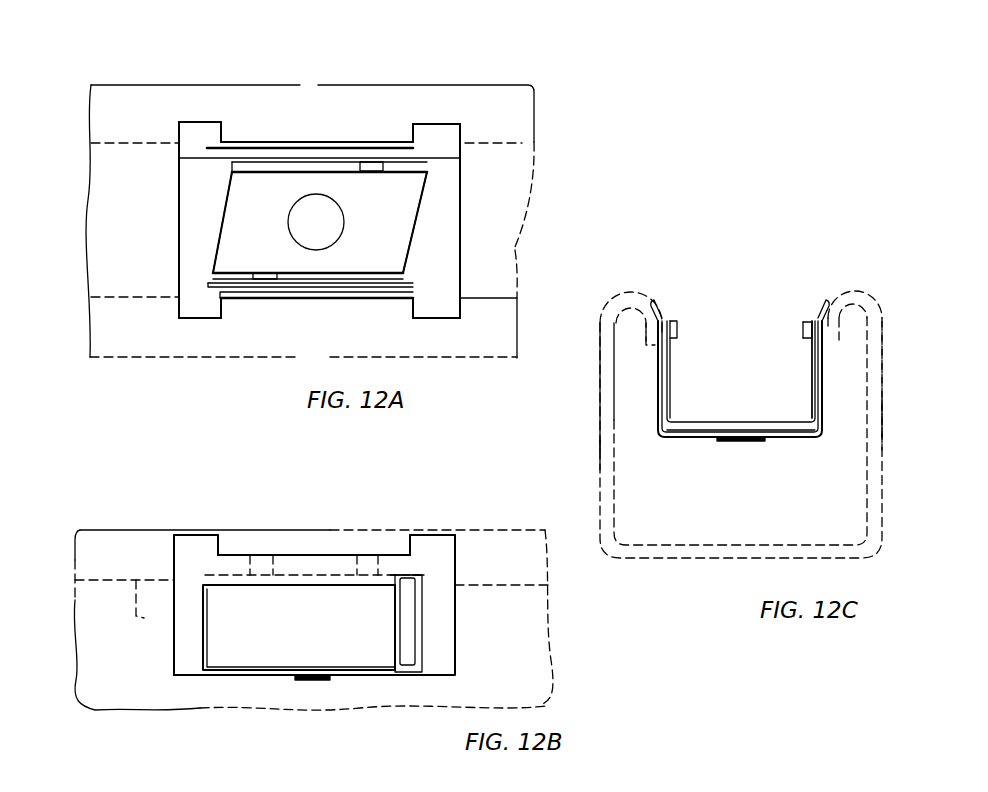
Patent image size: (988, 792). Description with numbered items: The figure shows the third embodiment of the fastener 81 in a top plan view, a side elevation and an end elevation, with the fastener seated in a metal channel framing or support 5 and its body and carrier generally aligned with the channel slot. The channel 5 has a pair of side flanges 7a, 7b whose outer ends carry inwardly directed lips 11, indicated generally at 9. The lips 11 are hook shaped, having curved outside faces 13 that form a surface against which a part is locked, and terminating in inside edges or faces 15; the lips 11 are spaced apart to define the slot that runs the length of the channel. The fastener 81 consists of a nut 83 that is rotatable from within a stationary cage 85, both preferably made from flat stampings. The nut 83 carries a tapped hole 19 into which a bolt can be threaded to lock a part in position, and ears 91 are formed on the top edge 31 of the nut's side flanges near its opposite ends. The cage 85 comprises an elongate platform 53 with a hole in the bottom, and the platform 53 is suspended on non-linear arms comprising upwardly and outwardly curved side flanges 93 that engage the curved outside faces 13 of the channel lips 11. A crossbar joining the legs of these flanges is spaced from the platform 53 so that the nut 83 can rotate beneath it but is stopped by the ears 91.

In FIG. 12A, the channel framing or support 5 is at (515, 246).
In FIG. 12B, the channel framing or support 5 is at (553, 650).
In FIG. 12C, the channel framing or support 5 is at (599, 410).
In FIG. 12C, the side flange 7a is at (599, 462).
In FIG. 12C, the side flange 7b is at (884, 426).
In FIG. 12A, the lip region 9 is at (532, 112).
In FIG. 12B, the lip region 9 is at (553, 556).
In FIG. 12C, the lip region 9 is at (852, 295).
In FIG. 12C, the lips 11 is at (615, 297).
In FIG. 12C, the outside faces 13 is at (656, 300).
In FIG. 12B, the inside edges or faces 15 is at (136, 622).
In FIG. 12C, the inside edges or faces 15 is at (860, 301).
In FIG. 12B, the tapped hole 19 is at (300, 683).
In FIG. 12C, the tapped hole 19 is at (722, 447).
In FIG. 12A, the top edge 31 is at (272, 170).
In FIG. 12A, the platform 53 is at (445, 232).
In FIG. 12A, the fastener 81 is at (480, 182).
In FIG. 12B, the fastener 81 is at (441, 528).
In FIG. 12C, the fastener 81 is at (691, 326).
In FIG. 12A, the nut 83 is at (430, 182).
In FIG. 12B, the nut 83 is at (407, 676).
In FIG. 12C, the nut 83 is at (800, 346).
In FIG. 12A, the cage 85 is at (461, 268).
In FIG. 12B, the cage 85 is at (172, 658).
In FIG. 12A, the ears 91 is at (368, 162).
In FIG. 12B, the ears 91 is at (363, 555).
In FIG. 12A, the side flanges 93 is at (199, 135).
In FIG. 12B, the side flanges 93 is at (196, 547).
In FIG. 12C, the side flanges 93 is at (741, 329).